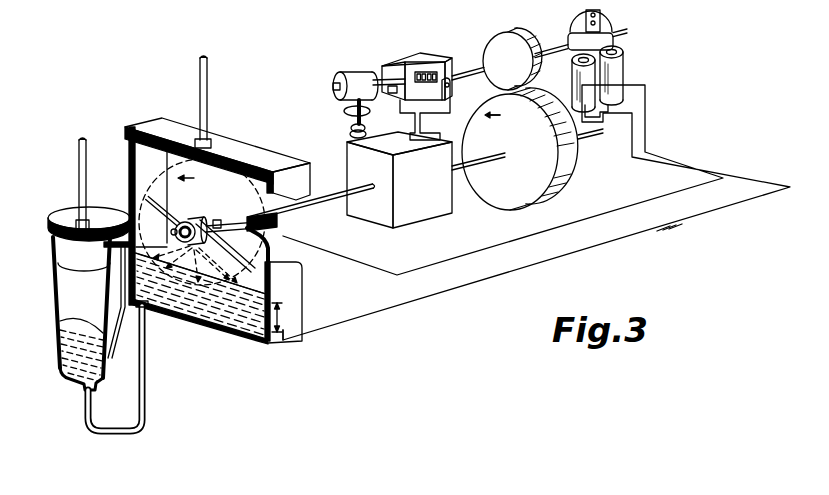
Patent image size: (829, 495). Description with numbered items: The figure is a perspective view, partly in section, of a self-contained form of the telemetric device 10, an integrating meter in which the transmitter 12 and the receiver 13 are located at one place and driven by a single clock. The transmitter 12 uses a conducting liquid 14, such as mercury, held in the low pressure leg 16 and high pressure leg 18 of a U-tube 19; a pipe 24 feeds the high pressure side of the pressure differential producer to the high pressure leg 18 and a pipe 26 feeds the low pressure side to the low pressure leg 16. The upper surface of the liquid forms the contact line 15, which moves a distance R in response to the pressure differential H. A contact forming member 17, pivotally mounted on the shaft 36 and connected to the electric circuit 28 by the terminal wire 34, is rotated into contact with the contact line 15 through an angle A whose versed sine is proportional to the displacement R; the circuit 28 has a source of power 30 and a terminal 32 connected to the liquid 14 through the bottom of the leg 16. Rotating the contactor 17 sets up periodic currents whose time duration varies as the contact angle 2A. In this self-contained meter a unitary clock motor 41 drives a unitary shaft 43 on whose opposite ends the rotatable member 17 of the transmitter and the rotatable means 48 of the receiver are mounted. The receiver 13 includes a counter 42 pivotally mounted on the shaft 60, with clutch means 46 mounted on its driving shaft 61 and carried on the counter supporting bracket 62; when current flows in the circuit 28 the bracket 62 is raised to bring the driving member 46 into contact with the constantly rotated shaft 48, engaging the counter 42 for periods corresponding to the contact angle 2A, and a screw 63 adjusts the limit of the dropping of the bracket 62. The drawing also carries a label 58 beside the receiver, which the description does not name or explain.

The telemetric device 10 is at (347, 43).
The transmitter 12 is at (284, 287).
The receiver 13 is at (473, 84).
The conducting liquid 14 is at (243, 328).
The contact line 15 is at (275, 243).
The low pressure leg 16 is at (195, 326).
The contact forming member 17 is at (170, 211).
The high pressure leg 18 is at (67, 377).
The U-tube 19 is at (152, 348).
The pipe 24 is at (84, 200).
The pipe 26 is at (203, 123).
The electric circuit 28 is at (486, 283).
The source of power 30 is at (677, 236).
The terminal 32 is at (307, 344).
The terminal wire 34 is at (275, 222).
The shaft 36 is at (217, 221).
The unitary clock motor 41 is at (416, 214).
The counter 42 is at (420, 57).
The unitary shaft 43 is at (329, 203).
The clutch means 46 is at (503, 43).
The rotatable means 48 is at (503, 197).
The cylinders 58 is at (623, 56).
The shaft 60 is at (452, 76).
The driving shaft 61 is at (541, 47).
The counter supporting bracket 62 is at (608, 33).
The screw 63 is at (345, 108).
The angle of contact 2A is at (217, 333).
The angle A is at (207, 267).
The pressure differential H is at (119, 279).
The displacement R is at (281, 317).